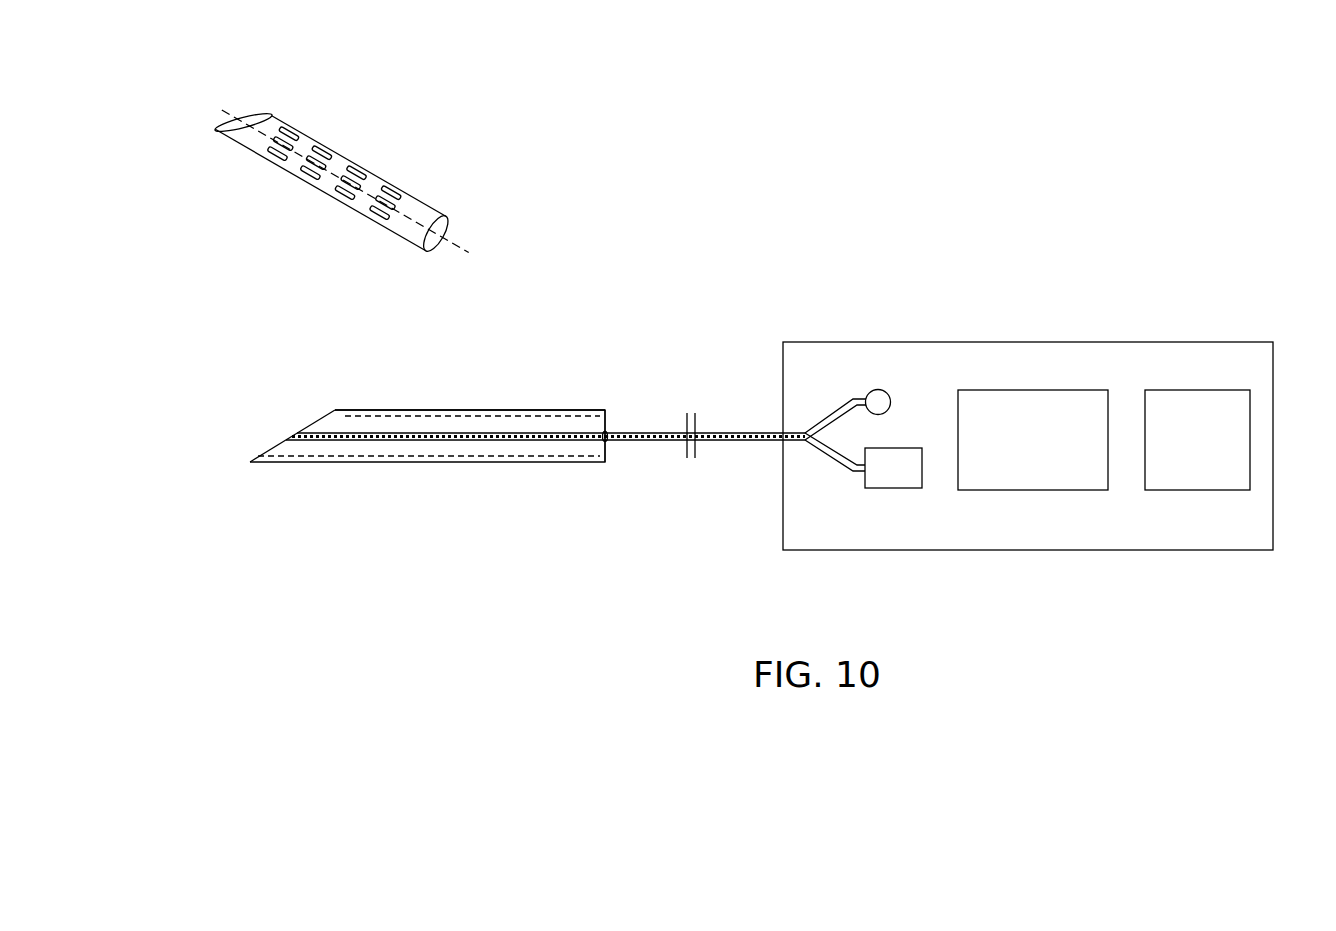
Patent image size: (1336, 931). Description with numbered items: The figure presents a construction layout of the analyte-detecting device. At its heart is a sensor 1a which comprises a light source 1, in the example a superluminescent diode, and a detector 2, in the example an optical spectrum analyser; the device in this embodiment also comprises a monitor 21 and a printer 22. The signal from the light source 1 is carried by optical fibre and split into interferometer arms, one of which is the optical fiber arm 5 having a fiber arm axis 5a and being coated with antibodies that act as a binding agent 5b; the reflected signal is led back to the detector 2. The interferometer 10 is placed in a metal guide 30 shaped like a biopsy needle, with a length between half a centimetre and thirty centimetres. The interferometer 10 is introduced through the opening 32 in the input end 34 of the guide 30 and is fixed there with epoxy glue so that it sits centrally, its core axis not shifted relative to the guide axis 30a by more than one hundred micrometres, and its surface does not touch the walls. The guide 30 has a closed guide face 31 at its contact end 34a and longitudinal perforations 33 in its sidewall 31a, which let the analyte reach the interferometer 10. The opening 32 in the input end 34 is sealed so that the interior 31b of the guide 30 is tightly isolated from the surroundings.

The light source 1 is at (878, 389).
The sensor 1a is at (730, 461).
The detector 2 is at (895, 489).
The optical fiber arm 5 is at (579, 415).
The fiber arm axis 5a is at (635, 432).
The binding agent 5b is at (520, 433).
The interferometer 10 is at (418, 436).
The monitor 21 is at (1033, 398).
The printer 22 is at (1177, 395).
The guide 30 is at (293, 175).
The guide axis 30a is at (462, 242).
The guide face 31 is at (308, 426).
The sidewall 31a is at (413, 197).
The interior 31b is at (343, 424).
The opening 32 is at (605, 442).
The longitudinal perforations 33 is at (330, 152).
The input end 34 is at (605, 429).
The contact end 34a is at (285, 441).